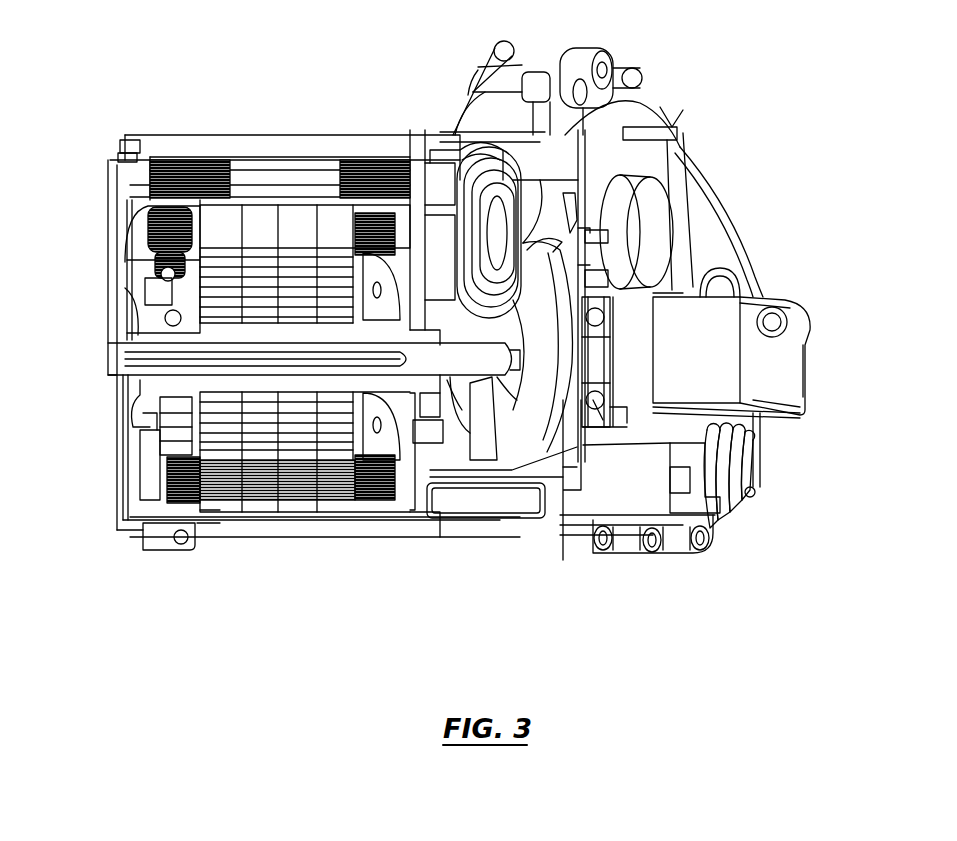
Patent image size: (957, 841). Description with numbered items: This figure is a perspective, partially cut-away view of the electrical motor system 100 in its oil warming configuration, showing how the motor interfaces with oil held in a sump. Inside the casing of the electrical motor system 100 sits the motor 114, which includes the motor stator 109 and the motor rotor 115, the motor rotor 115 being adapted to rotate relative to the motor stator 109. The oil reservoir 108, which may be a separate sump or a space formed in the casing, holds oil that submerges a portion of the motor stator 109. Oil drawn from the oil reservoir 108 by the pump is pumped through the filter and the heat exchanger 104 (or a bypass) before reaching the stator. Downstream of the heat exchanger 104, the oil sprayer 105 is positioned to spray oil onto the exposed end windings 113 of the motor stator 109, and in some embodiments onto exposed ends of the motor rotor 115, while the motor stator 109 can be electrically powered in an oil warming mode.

The electrical motor system 100 is at (800, 178).
The heat exchanger 104 is at (808, 372).
The oil sprayer 105 is at (180, 160).
The oil reservoir 108 is at (262, 528).
The motor stator 109 is at (337, 190).
The end winding 113 is at (400, 245).
The motor 114 is at (300, 200).
The motor rotor 115 is at (440, 490).